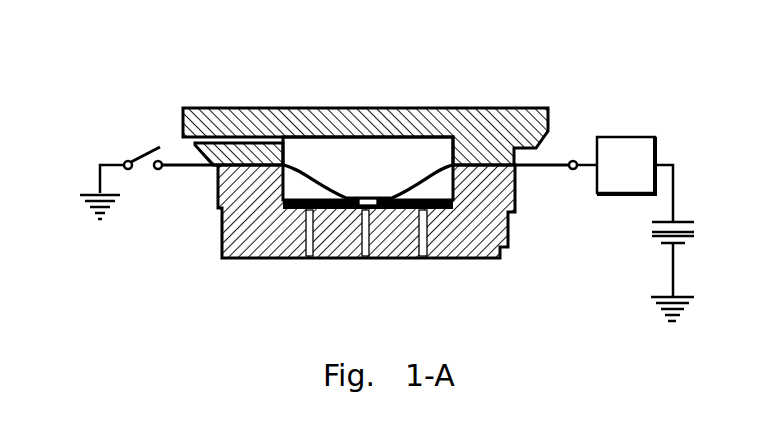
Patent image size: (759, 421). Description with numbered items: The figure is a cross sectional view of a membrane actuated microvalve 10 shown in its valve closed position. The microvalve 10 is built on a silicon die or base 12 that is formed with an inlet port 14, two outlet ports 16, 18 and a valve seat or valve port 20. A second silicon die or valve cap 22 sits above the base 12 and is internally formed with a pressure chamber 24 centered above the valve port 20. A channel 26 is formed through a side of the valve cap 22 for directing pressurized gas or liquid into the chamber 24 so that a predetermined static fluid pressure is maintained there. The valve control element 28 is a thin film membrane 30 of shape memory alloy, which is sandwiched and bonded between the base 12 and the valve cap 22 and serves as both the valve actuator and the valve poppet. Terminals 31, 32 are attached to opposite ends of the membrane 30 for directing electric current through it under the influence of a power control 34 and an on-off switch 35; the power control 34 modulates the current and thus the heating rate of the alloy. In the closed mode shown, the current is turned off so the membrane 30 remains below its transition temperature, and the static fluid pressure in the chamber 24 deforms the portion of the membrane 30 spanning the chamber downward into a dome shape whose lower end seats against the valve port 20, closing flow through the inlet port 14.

The membrane actuated microvalve 10 is at (396, 167).
The base 12 is at (226, 243).
The inlet port 14 is at (366, 261).
The outlet port 16 is at (311, 261).
The outlet port 18 is at (422, 261).
The valve seat 20 is at (392, 203).
The valve cap 22 is at (548, 113).
The pressure chamber 24 is at (368, 151).
The channel 26 is at (187, 142).
The valve control element 28 is at (560, 157).
The membrane 30 is at (312, 178).
The terminal 31 is at (154, 171).
The terminal 32 is at (573, 170).
The power control 34 is at (655, 137).
The on-off switch 35 is at (142, 153).